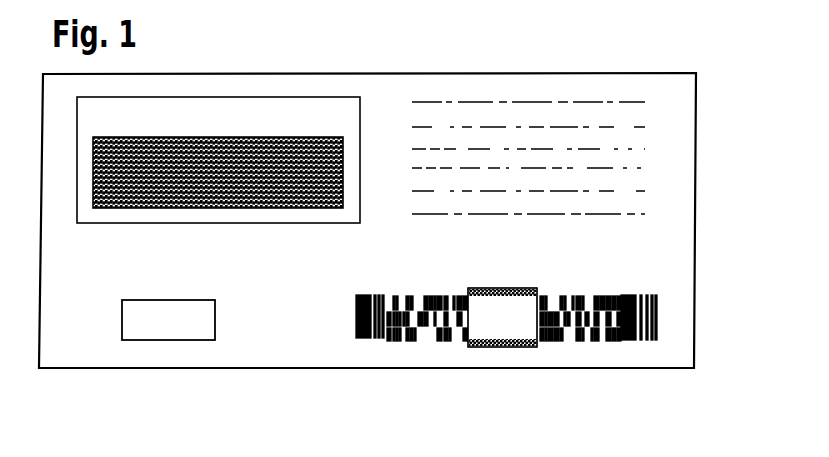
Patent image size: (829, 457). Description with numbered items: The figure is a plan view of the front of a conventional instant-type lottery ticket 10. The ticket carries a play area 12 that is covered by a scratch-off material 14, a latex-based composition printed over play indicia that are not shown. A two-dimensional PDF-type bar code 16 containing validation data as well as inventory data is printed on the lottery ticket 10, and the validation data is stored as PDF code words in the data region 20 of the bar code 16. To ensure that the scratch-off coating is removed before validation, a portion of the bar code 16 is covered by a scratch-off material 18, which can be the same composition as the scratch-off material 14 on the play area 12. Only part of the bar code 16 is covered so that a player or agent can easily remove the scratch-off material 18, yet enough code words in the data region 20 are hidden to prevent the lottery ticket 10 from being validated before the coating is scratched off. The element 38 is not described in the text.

The lottery ticket 10 is at (696, 114).
The play area 12 is at (303, 95).
The scratch-off material 14 is at (141, 143).
The bar code 16 is at (657, 308).
The scratch-off material 18 is at (477, 347).
The interrupting panel 38 is at (523, 347).
The data region 20 is at (554, 370).